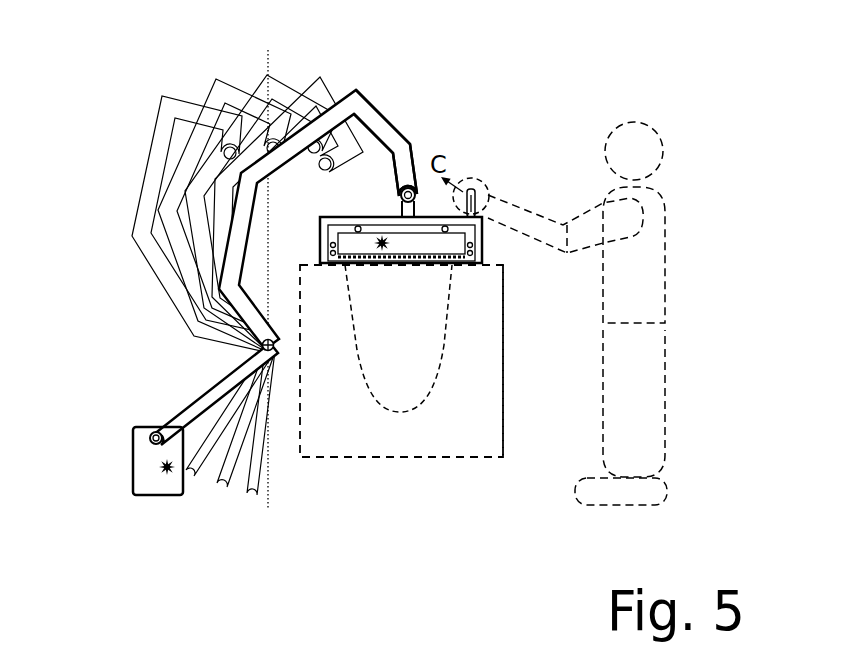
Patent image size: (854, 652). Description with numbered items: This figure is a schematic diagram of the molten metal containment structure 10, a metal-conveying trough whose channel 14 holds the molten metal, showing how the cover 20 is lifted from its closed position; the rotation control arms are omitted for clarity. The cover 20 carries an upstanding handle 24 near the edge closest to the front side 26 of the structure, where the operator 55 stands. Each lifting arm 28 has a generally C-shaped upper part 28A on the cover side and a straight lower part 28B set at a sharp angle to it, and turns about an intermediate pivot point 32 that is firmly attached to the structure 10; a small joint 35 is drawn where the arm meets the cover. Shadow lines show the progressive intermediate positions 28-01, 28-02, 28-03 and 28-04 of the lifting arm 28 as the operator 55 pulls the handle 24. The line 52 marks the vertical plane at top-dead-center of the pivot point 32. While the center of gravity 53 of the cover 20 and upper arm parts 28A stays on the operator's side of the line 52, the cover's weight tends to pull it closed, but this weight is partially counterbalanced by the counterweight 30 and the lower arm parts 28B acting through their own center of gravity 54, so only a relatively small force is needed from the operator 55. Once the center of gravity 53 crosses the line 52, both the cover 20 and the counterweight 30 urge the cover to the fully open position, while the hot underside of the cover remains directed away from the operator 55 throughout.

The molten metal containment structure 10 is at (392, 443).
The channel 14 is at (417, 365).
The cover 20 is at (328, 218).
The handle 24 is at (477, 183).
The front side 26 is at (503, 393).
The lifting arm 28 is at (341, 198).
The upper arm part 28A is at (377, 115).
The lower arm part 28B is at (203, 400).
The first intermediate position of lifting arm 28-01 is at (323, 80).
The second intermediate position of lifting arm 28-02 is at (273, 77).
The third intermediate position of lifting arm 28-03 is at (222, 80).
The fourth intermediate position of lifting arm 28-04 is at (168, 98).
The counterweight 30 is at (140, 485).
The pivot point 32 is at (272, 347).
The swivel joint 35 is at (398, 194).
The line 52 is at (268, 497).
The center of gravity of cover and upper arm parts 53 is at (378, 250).
The center of gravity of counterweight and lower arm parts 54 is at (167, 475).
The operator 55 is at (648, 365).